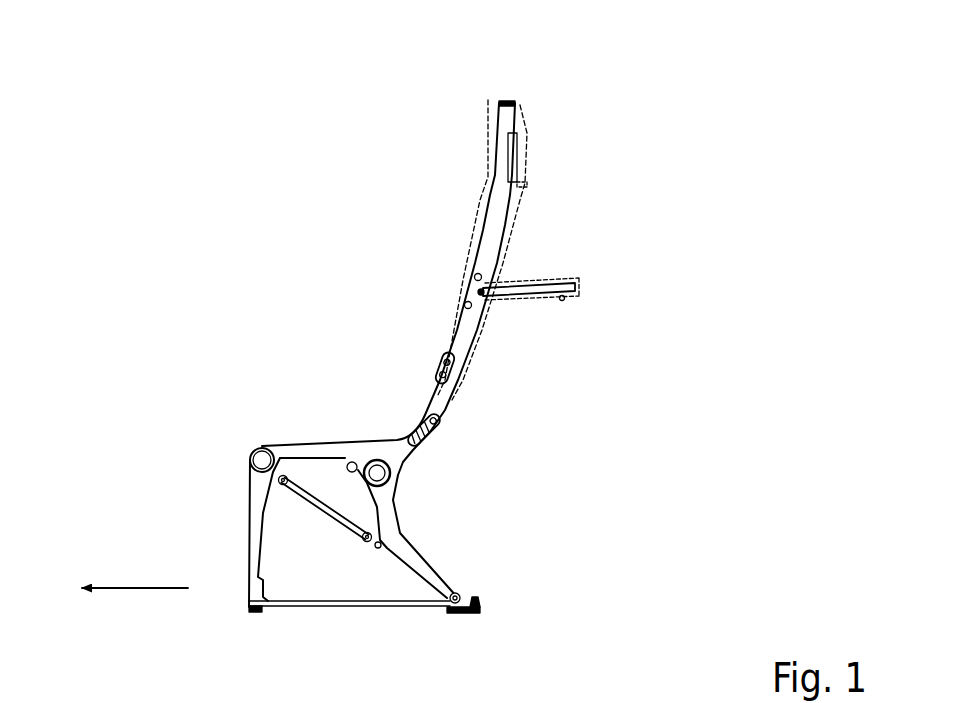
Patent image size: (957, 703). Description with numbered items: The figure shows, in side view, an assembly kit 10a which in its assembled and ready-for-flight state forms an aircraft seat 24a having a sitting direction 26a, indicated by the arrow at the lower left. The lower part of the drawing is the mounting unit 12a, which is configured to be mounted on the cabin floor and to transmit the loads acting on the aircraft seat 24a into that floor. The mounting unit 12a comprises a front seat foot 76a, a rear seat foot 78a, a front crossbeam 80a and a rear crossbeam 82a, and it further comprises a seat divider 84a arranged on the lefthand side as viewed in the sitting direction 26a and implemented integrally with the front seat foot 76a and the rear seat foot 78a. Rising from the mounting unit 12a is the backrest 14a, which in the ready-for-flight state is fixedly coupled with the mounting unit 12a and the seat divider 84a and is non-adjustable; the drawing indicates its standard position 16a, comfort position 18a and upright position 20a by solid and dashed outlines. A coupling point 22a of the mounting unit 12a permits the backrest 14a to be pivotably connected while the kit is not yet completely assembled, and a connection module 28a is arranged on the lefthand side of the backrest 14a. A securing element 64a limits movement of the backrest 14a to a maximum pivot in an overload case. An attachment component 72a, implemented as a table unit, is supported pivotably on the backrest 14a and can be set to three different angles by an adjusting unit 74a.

The assembly kit 10a is at (262, 190).
The mounting unit 12a is at (239, 520).
The backrest 14a is at (492, 210).
The standard position 16a is at (508, 98).
The comfort position 18a is at (521, 100).
The upright position 20a is at (491, 96).
The coupling point 22a is at (459, 373).
The aircraft seat 24a is at (372, 396).
The sitting direction 26a is at (138, 590).
The connection module 28a is at (425, 441).
The securing element 64a is at (395, 478).
The attachment component 72a is at (577, 289).
The adjusting unit 74a is at (474, 291).
The front seat foot 76a is at (253, 568).
The rear seat foot 78a is at (436, 597).
The front crossbeam 80a is at (249, 447).
The rear crossbeam 82a is at (400, 470).
The seat divider 84a is at (395, 449).